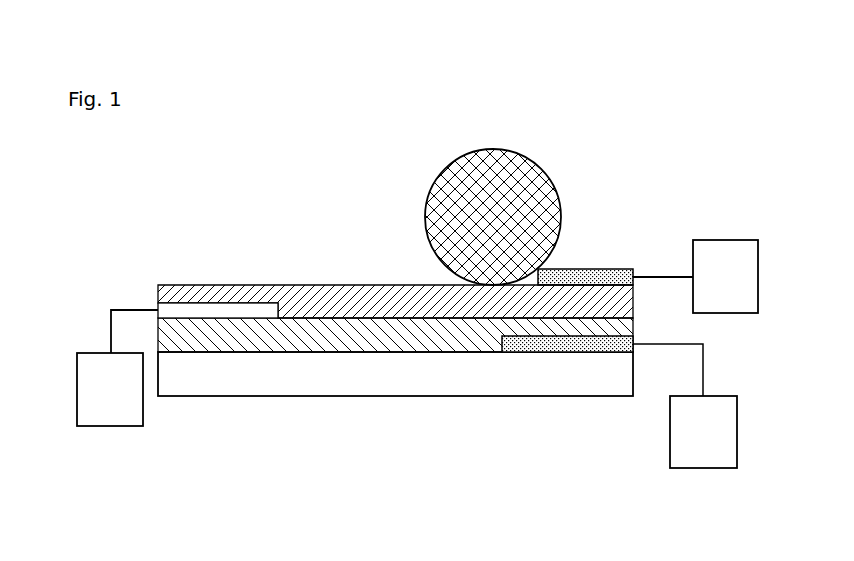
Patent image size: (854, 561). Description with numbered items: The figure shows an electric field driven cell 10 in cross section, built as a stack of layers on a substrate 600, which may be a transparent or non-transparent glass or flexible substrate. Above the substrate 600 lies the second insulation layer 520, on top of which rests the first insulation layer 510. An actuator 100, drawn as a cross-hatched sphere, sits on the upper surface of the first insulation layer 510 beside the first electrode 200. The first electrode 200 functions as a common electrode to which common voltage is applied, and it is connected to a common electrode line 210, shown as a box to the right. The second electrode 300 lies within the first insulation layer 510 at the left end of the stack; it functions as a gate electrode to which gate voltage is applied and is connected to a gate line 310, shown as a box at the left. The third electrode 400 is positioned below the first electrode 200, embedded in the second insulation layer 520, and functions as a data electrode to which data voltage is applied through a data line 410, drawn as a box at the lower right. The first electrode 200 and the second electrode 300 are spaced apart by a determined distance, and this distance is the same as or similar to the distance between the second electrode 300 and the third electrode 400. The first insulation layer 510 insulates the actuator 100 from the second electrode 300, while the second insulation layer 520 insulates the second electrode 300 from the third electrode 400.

The electric field driven cell 10 is at (392, 542).
The actuator 100 is at (513, 151).
The first electrode 200 is at (598, 269).
The common electrode line 210 is at (729, 240).
The second electrode 300 is at (202, 310).
The gate line 310 is at (97, 353).
The third electrode 400 is at (560, 353).
The data line 410 is at (725, 396).
The first insulation layer 510 is at (380, 305).
The second insulation layer 520 is at (333, 335).
The substrate 600 is at (365, 380).